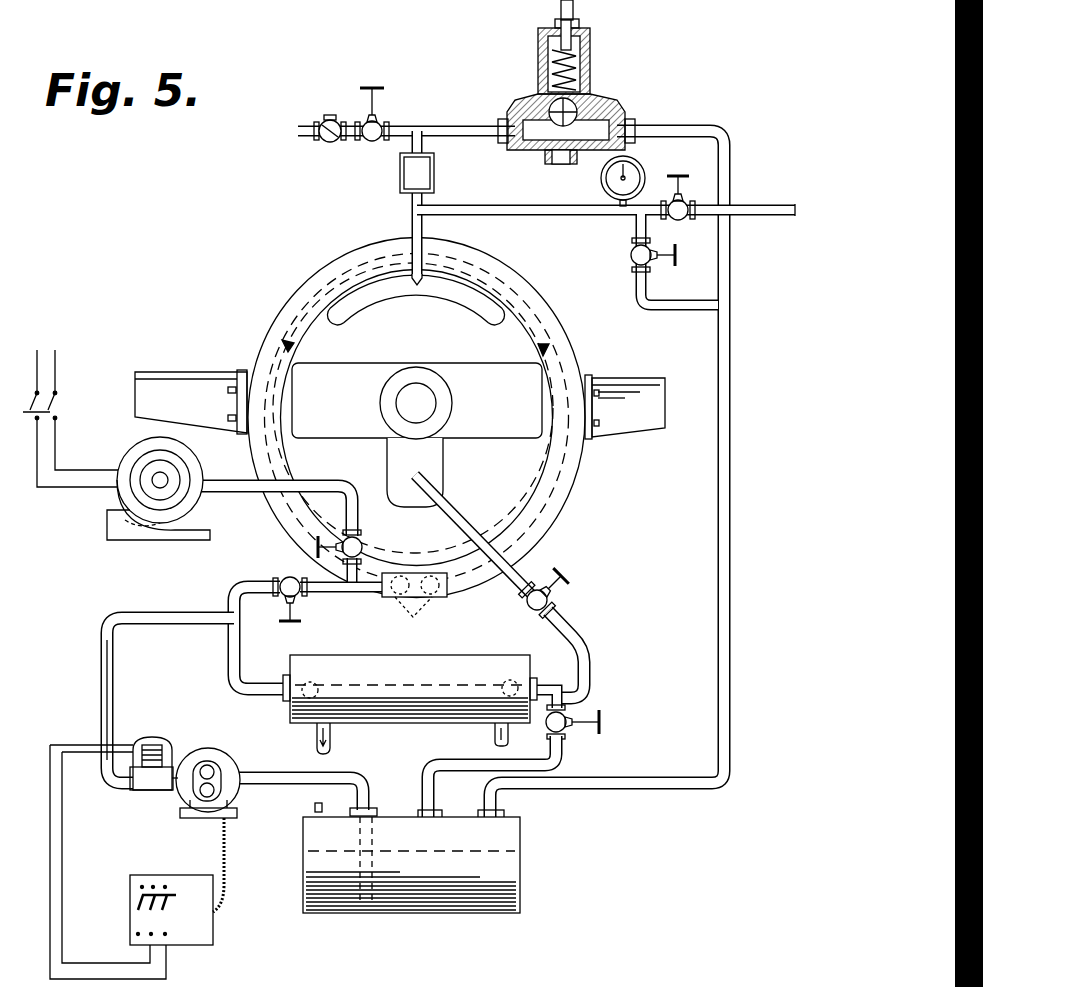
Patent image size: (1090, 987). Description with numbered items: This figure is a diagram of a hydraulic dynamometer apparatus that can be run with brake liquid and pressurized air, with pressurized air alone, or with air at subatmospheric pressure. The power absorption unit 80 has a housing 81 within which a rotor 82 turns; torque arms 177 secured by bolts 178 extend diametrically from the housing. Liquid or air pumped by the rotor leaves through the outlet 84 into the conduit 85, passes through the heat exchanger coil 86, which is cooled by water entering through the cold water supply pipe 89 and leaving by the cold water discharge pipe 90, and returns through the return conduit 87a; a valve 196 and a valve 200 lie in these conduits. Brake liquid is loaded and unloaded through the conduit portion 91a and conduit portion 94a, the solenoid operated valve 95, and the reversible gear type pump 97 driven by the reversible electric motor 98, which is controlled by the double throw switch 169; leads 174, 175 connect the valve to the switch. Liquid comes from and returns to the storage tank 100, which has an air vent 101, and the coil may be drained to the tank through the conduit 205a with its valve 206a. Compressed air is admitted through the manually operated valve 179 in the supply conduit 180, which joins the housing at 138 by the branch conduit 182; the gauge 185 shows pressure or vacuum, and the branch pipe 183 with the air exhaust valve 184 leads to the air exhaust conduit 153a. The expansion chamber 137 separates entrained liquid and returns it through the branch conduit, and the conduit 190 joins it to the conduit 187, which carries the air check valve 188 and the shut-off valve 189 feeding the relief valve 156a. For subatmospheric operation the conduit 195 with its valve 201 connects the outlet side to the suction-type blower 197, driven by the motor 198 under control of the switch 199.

The hydraulic brake or power absorption unit 80 is at (565, 328).
The stator or housing 81 is at (272, 318).
The rotor 82 is at (578, 479).
The outlet 84 is at (413, 607).
The conduit 85 is at (325, 593).
The heat exchanger coil 86 is at (460, 690).
The return conduit 87a is at (590, 640).
The cold water supply pipe 89 is at (495, 737).
The cold water discharge pipe 90 is at (330, 738).
The conduit portion 91a is at (163, 613).
The conduit portion 94a is at (113, 700).
The solenoid operated valve 95 is at (160, 738).
The reversible gear type pump 97 is at (222, 770).
The reversible electric motor 98 is at (218, 760).
The brake liquid storage tank 100 is at (521, 878).
The air vent 101 is at (315, 807).
The expansion chamber 137 is at (435, 175).
The housing connection point 138 is at (415, 300).
The air exhaust conduit 153a is at (731, 523).
The relief valve 156a is at (537, 57).
The manually operable double throw switch 169 is at (213, 920).
The lead 174 is at (50, 862).
The lead 175 is at (63, 840).
The torque arms 177 is at (165, 372).
The bolts 178 is at (230, 417).
The manually operated valve 179 is at (684, 188).
The supply conduit 180 is at (772, 210).
The branch conduit 182 is at (423, 228).
The branch pipe 183 is at (690, 310).
The manually operable air exhaust valve 184 is at (628, 258).
The combined air pressure and vacuum gauge 185 is at (640, 163).
The conduit 187 is at (428, 126).
The air check valve 188 is at (330, 118).
The manually operable shut-off valve 189 is at (370, 142).
The conduit 190 is at (424, 147).
The conduit 195 is at (244, 493).
The manually operable valve 196 is at (290, 578).
The suction-type blower 197 is at (190, 476).
The motor 198 is at (145, 457).
The manually operated switch 199 is at (56, 400).
The manually operated valve 200 is at (560, 605).
The manually operable valve 201 is at (363, 543).
The conduit 205a is at (427, 766).
The manually operable valve 206a is at (582, 722).